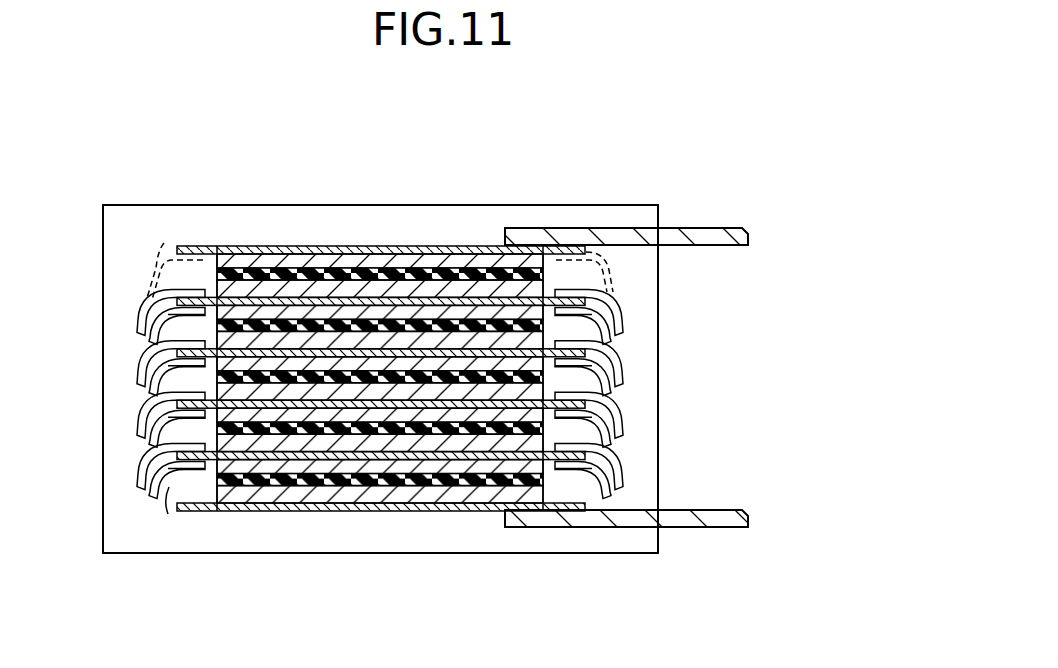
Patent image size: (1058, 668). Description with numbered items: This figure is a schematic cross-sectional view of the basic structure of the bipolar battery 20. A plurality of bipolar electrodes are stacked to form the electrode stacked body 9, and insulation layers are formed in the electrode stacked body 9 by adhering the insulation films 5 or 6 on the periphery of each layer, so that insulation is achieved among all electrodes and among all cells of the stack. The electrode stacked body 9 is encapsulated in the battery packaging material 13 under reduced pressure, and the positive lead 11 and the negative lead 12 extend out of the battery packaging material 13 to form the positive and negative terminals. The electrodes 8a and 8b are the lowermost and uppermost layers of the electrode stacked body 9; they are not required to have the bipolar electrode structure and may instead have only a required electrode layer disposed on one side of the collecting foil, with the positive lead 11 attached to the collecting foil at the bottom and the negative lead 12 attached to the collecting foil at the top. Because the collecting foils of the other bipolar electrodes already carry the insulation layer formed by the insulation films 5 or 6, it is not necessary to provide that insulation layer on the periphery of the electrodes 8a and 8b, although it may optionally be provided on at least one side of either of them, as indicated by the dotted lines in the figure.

The bipolar battery 20 is at (205, 150).
The battery packaging material 13 is at (500, 204).
The negative lead 12 is at (712, 228).
The positive lead 11 is at (709, 510).
The electrode stacked body 9 is at (152, 229).
The electrode 8a is at (165, 498).
The electrode 8b is at (160, 250).
The insulation film 5 is at (620, 324).
The insulation film 6 is at (380, 402).